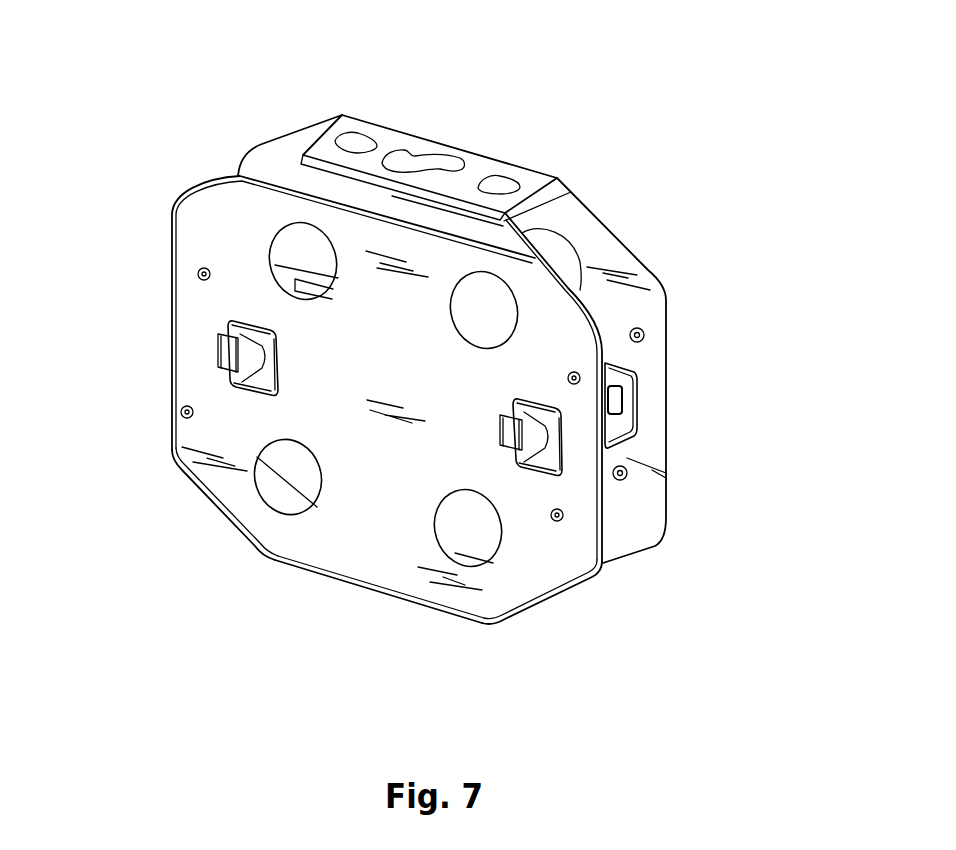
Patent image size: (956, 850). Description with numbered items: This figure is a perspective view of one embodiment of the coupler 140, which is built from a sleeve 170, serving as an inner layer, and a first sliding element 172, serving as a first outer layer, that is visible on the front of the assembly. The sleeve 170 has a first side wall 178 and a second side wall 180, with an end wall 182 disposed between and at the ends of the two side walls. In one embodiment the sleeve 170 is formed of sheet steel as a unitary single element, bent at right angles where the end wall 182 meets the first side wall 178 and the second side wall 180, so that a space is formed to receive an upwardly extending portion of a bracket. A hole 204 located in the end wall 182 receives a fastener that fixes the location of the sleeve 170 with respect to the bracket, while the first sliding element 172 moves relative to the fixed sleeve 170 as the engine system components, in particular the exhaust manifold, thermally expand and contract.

The coupler 140 is at (668, 222).
The sleeve 170 is at (378, 125).
The first sliding element 172 is at (197, 303).
The first side wall 178 is at (547, 600).
The second side wall 180 is at (640, 517).
The end wall 182 is at (497, 165).
The hole 204 is at (424, 163).